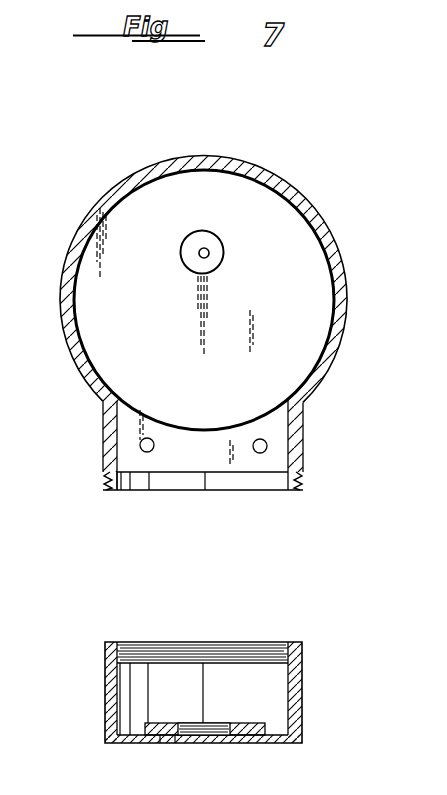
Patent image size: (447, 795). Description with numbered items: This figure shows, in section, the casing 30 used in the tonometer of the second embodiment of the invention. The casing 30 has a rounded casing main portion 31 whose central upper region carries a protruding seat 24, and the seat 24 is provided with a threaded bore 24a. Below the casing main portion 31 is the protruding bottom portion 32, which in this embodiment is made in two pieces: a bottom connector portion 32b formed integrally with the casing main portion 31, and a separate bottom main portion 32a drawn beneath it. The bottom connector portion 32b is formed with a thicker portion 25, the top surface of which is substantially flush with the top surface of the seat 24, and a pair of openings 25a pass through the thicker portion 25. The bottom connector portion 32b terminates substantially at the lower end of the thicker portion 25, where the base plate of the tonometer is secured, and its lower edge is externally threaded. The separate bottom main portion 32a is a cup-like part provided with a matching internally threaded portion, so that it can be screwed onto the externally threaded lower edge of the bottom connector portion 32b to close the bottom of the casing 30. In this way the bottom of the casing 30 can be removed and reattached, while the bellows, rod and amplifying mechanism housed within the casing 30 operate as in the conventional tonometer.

The casing 30 is at (297, 184).
The casing main portion 31 is at (336, 240).
The protruding seat 24 is at (214, 259).
The threaded bore 24a is at (207, 251).
The thicker portion 25 is at (283, 427).
The openings 25a is at (269, 449).
The protruding bottom portion 32 is at (212, 617).
The bottom main portion 32a is at (106, 712).
The bottom connector portion 32b is at (106, 464).